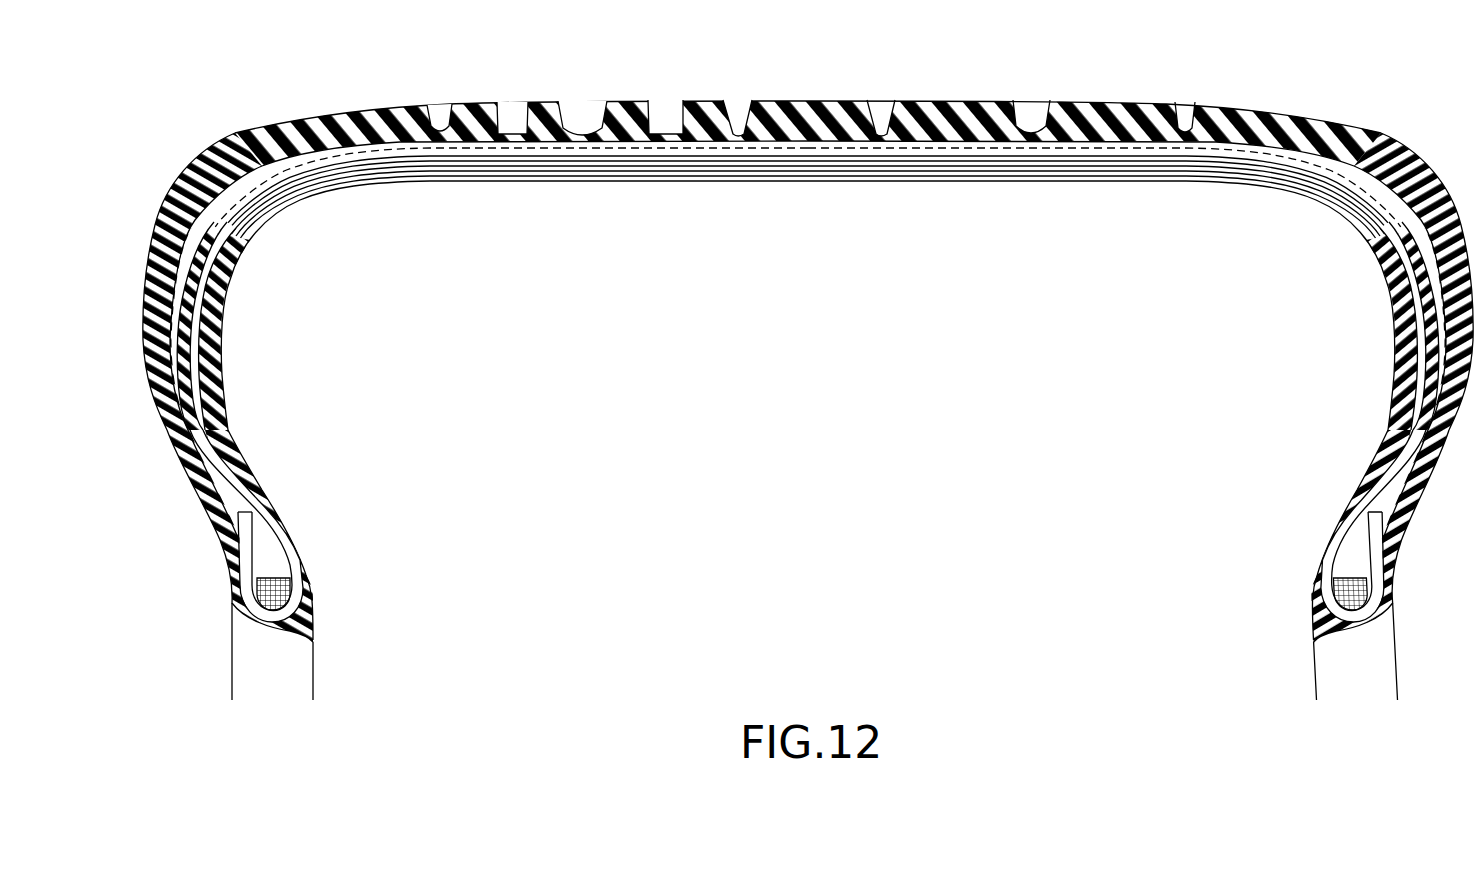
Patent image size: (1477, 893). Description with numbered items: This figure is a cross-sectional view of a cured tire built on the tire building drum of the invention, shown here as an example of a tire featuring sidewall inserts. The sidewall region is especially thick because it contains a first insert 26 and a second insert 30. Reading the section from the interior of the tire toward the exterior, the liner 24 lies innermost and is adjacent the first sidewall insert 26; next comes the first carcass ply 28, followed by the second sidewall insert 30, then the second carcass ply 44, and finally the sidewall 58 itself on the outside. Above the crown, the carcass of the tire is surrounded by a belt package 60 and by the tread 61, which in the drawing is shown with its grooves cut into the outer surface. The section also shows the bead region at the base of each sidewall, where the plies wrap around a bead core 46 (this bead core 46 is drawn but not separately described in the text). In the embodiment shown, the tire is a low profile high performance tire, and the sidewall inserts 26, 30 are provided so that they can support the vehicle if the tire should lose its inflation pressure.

The liner 24 is at (228, 410).
The first insert 26 is at (247, 243).
The first carcass ply 28 is at (235, 287).
The second insert 30 is at (236, 315).
The second carcass ply 44 is at (220, 353).
The bead core 46 is at (283, 578).
The sidewall 58 is at (220, 385).
The belt package 60 is at (428, 167).
The tread 61 is at (650, 122).